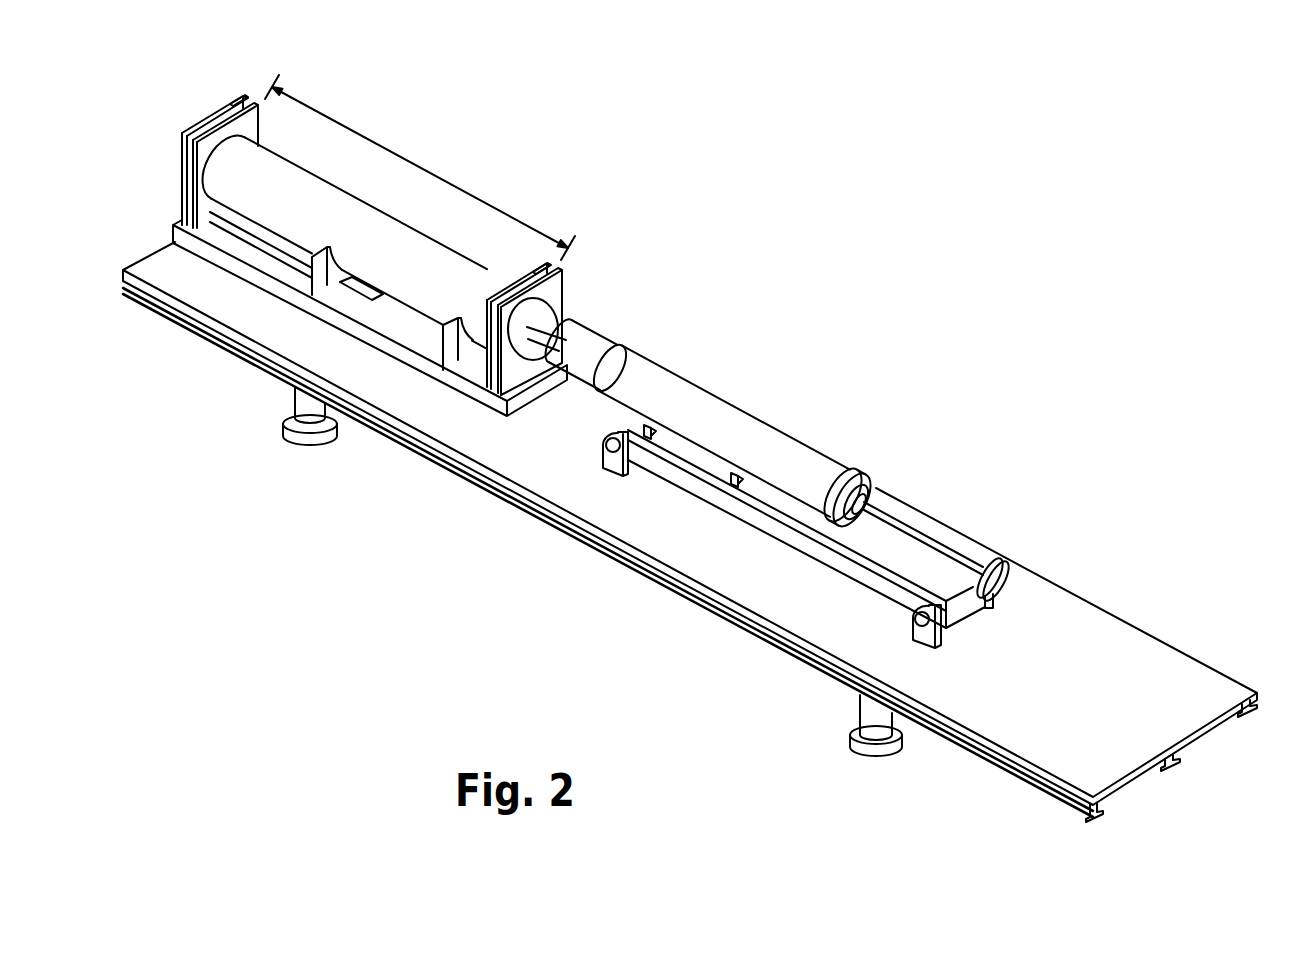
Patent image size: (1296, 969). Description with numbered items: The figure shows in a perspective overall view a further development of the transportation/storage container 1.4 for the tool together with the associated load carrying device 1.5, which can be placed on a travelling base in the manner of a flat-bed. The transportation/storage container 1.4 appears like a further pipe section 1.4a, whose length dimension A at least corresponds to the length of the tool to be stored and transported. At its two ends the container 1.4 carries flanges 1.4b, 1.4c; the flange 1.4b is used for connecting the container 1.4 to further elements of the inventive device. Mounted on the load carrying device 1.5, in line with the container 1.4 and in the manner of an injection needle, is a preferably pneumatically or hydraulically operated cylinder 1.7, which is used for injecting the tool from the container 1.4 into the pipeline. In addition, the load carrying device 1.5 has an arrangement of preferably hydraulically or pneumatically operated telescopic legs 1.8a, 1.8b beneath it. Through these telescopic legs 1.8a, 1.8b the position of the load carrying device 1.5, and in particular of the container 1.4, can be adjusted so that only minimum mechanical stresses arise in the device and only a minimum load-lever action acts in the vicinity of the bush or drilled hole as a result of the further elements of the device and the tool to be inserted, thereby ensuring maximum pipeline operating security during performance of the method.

The transportation/storage container 1.4 is at (512, 160).
The pipe section 1.4a is at (356, 193).
The flange 1.4b is at (232, 101).
The flange 1.4c is at (550, 290).
The load carrying device 1.5 is at (823, 363).
The cylinder 1.7 is at (797, 460).
The telescopic leg 1.8a is at (315, 445).
The telescopic leg 1.8b is at (865, 755).
The length dimension A is at (407, 157).